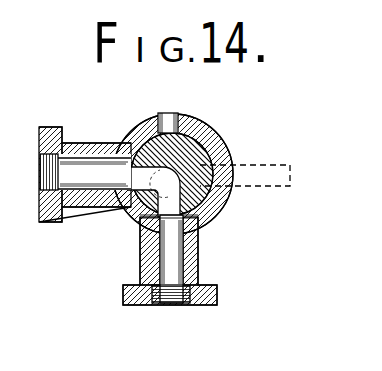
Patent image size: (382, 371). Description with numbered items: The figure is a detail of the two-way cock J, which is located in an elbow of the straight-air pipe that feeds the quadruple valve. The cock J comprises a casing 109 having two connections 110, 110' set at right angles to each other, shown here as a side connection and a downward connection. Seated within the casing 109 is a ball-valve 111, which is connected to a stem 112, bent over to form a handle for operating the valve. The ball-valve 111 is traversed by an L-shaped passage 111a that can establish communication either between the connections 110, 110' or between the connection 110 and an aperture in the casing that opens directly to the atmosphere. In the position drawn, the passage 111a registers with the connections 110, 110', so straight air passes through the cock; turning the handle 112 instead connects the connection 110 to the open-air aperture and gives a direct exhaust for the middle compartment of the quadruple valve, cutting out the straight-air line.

The two-way cock J is at (173, 161).
The casing 109 is at (216, 140).
The connection 110 is at (85, 174).
The connection 110' is at (182, 260).
The ball-valve 111 is at (228, 198).
The L-shaped passage 111a is at (134, 205).
The stem 112 is at (271, 165).